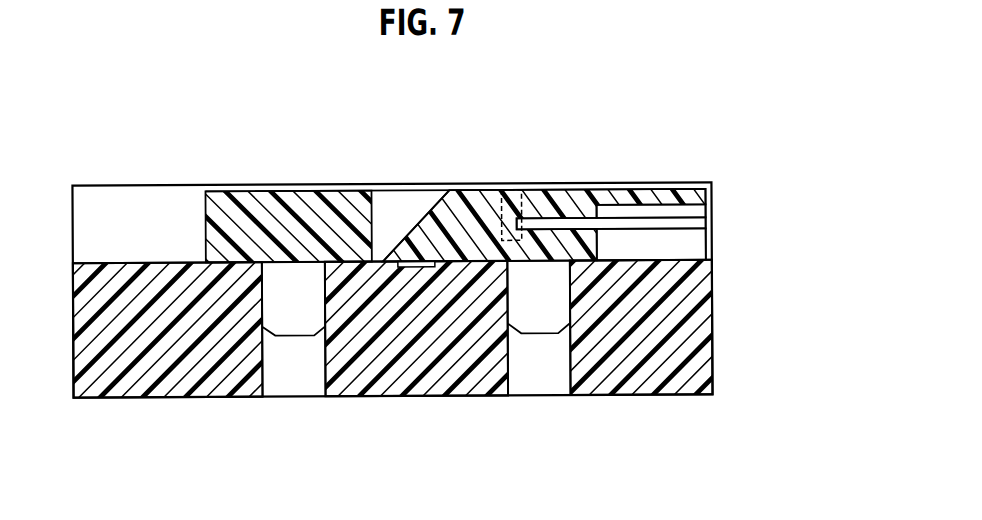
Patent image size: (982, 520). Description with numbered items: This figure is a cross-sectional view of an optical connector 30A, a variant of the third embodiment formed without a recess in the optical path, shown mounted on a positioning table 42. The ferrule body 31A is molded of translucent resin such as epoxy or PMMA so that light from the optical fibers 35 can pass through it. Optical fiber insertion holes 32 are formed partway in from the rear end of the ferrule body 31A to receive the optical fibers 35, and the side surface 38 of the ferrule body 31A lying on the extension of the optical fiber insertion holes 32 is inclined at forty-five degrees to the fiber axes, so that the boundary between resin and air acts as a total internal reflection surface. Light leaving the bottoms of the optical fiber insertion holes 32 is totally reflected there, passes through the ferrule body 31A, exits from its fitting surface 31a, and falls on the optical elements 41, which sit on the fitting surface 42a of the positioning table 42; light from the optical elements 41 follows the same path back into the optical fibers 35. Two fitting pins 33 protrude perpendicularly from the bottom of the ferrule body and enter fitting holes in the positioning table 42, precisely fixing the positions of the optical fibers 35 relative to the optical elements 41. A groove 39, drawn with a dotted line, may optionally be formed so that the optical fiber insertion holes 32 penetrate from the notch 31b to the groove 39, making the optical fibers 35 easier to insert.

The optical connector 30A is at (590, 96).
The fitting surface 31a is at (332, 268).
The ferrule body 31A is at (466, 218).
The notch 31b is at (644, 207).
The optical fiber insertion holes 32 is at (558, 223).
The fitting pins 33 is at (293, 313).
The optical fibers 35 is at (690, 227).
The left side surface 38 is at (417, 226).
The groove 39 is at (510, 190).
The optical elements 41 is at (415, 268).
The positioning table 42 is at (118, 283).
The fitting surface 42a is at (478, 268).